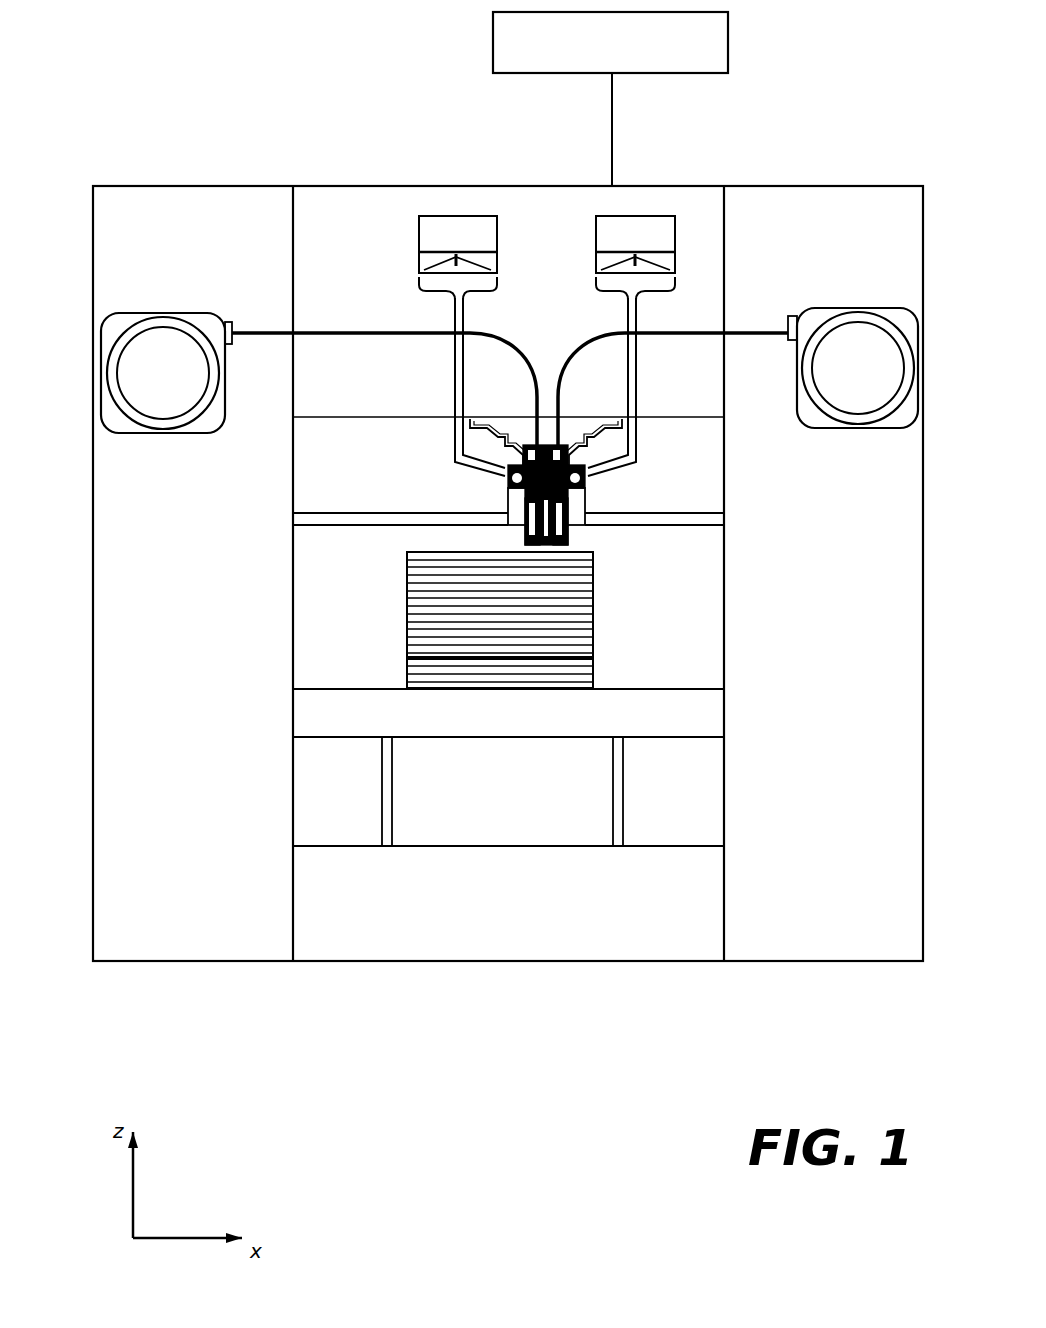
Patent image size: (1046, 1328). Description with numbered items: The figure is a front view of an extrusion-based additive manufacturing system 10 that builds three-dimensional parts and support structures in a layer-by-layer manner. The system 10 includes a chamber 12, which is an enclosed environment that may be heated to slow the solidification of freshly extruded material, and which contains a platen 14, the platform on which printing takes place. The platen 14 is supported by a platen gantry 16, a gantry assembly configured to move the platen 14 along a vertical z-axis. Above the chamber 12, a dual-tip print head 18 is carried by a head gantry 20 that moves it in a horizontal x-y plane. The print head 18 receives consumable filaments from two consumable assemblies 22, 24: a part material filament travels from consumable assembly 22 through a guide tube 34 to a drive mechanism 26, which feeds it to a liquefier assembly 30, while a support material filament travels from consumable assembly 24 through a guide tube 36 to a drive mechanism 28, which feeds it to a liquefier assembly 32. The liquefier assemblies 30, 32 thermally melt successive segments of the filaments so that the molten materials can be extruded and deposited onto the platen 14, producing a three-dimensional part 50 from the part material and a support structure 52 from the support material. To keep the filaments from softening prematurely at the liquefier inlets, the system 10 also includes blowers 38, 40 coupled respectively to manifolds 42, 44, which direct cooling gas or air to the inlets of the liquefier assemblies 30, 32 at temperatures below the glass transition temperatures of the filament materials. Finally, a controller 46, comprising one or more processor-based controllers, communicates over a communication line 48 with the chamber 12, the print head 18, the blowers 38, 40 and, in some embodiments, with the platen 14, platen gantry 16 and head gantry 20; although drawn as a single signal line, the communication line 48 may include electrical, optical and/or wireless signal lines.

The system 10 is at (327, 151).
The chamber 12 is at (305, 635).
The platen 14 is at (717, 725).
The platen gantry 16 is at (626, 826).
The print head 18 is at (680, 492).
The head gantry 20 is at (360, 512).
The consumable assembly 22 is at (152, 313).
The consumable assembly 24 is at (820, 309).
The drive mechanism 26 is at (497, 488).
The drive mechanism 28 is at (598, 488).
The liquefier assembly 30 is at (517, 535).
The liquefier assembly 32 is at (577, 535).
The guide tube 34 is at (310, 333).
The guide tube 36 is at (733, 333).
The blower 38 is at (432, 218).
The blower 40 is at (643, 218).
The manifold 42 is at (455, 362).
The manifold 44 is at (636, 362).
The controller 46 is at (730, 22).
The communication line 48 is at (611, 104).
The 3D part 50 is at (587, 616).
The support structure 52 is at (415, 673).